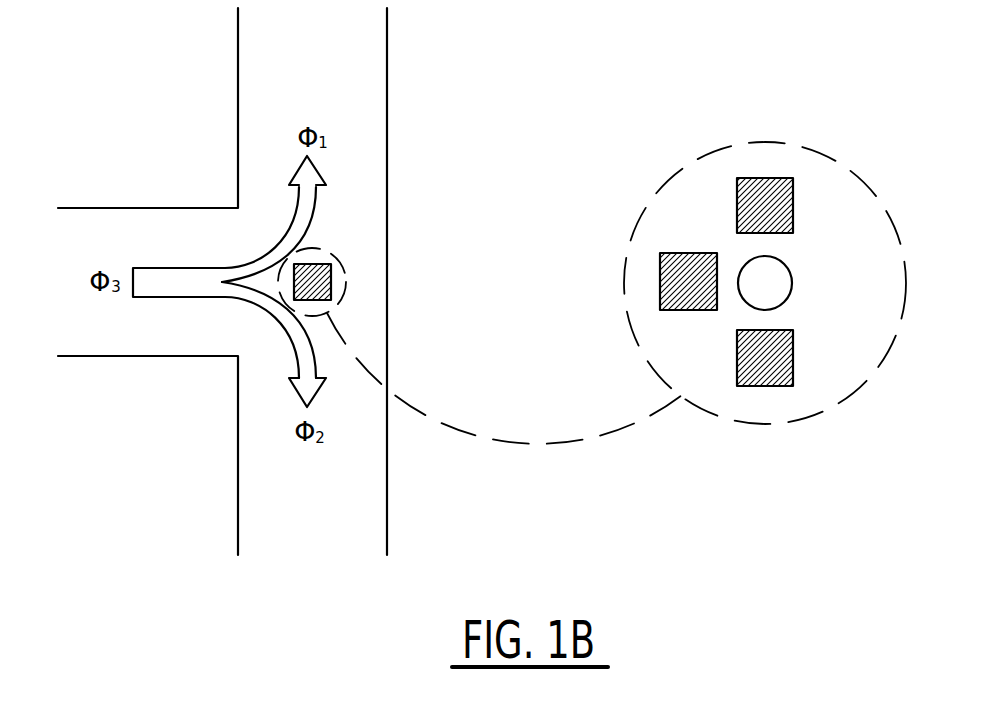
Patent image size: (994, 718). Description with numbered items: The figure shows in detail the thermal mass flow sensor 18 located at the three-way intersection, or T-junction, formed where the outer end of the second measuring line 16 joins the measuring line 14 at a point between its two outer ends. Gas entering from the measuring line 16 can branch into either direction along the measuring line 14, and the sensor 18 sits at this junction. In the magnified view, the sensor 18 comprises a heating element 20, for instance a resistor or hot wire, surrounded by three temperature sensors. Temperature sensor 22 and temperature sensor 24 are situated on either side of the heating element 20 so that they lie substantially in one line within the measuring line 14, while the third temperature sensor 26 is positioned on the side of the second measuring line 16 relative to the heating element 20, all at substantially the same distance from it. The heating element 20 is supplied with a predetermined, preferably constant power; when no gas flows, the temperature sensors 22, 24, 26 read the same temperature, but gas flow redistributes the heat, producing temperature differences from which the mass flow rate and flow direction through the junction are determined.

The measuring line 14 is at (387, 177).
The second measuring line 16 is at (108, 208).
The thermal mass flow sensor 18 is at (317, 282).
The heating element 20 is at (777, 280).
The temperature sensor 22 is at (762, 195).
The temperature sensor 24 is at (777, 375).
The third temperature sensor 26 is at (682, 268).